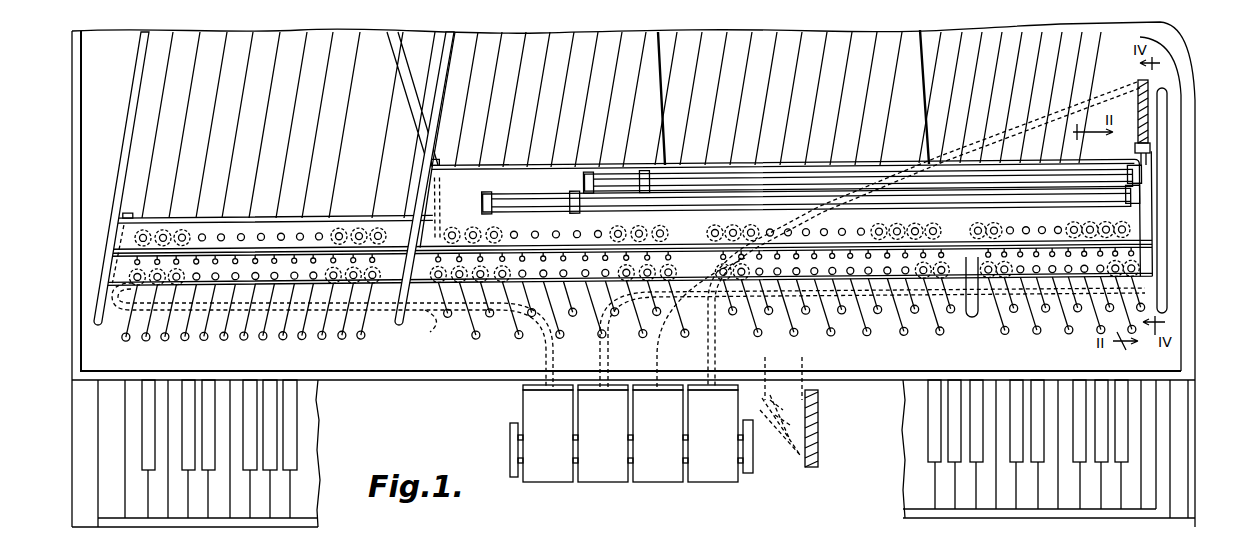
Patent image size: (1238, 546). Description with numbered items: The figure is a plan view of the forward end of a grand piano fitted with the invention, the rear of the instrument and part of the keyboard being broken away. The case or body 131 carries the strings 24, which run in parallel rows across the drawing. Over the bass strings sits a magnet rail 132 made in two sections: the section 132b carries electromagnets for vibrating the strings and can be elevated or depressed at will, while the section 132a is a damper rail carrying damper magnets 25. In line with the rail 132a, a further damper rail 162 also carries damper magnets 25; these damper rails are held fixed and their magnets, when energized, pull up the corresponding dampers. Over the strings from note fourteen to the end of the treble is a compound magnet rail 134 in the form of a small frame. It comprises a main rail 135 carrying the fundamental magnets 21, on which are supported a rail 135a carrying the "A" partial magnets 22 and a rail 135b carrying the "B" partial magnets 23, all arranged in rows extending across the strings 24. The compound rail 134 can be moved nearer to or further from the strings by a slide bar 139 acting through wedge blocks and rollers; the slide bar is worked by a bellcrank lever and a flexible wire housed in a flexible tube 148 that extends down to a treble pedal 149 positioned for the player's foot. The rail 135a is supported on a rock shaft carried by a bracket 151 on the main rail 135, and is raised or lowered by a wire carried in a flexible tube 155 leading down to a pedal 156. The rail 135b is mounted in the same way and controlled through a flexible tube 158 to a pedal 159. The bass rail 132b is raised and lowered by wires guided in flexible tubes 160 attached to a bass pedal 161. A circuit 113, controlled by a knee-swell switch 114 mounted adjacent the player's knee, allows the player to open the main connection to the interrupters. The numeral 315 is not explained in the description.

The fundamental magnets 21 is at (497, 236).
The "A" partial magnets 22 is at (550, 207).
The "B" partial magnets 23 is at (647, 178).
The strings 24 is at (190, 91).
The damper magnets 25 is at (165, 284).
The circuit 113 is at (806, 386).
The knee-swell switch 114 is at (786, 452).
The case or body 131 is at (90, 96).
The magnet rail 132 is at (413, 187).
The damper rail 132a is at (212, 330).
The magnet rail section 132b is at (130, 216).
The compound magnet rail 134 is at (503, 180).
The main rail 135 is at (460, 193).
The partial rail 135a is at (672, 216).
The partial rail 135b is at (586, 186).
The slide bar 139 is at (378, 233).
The flexible casing or tube 148 is at (606, 338).
The treble pedal 149 is at (596, 481).
The bracket 151 is at (1035, 543).
The flexible tube 155 is at (1148, 82).
The pedal 156 is at (711, 481).
The flexible tube 158 is at (661, 362).
The pedal 159 is at (646, 481).
The flexible guide tubes 160 is at (416, 318).
The bass pedal 161 is at (566, 483).
The damper rail 162 is at (803, 317).
The keyboard 315 is at (453, 543).